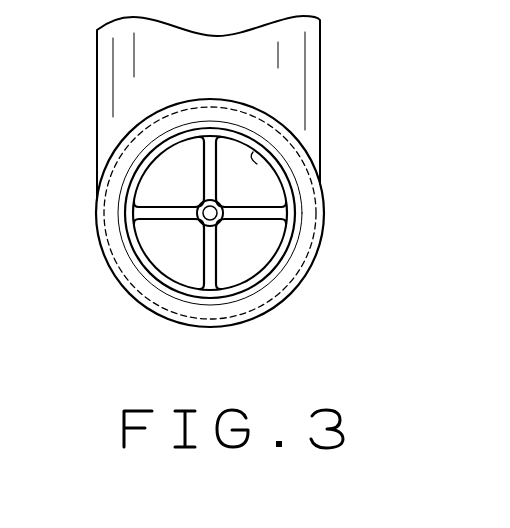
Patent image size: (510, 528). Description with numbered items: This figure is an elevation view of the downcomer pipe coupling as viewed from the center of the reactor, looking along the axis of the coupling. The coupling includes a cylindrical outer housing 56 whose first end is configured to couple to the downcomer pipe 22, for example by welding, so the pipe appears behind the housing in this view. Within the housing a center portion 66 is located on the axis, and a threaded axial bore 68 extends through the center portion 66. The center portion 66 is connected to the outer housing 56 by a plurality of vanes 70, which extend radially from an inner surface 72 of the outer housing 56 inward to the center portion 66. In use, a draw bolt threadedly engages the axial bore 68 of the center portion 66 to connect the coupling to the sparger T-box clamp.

The downcomer pipe 22 is at (321, 52).
The cylindrical outer housing 56 is at (287, 238).
The center portion 66 is at (222, 222).
The threaded axial bore 68 is at (212, 210).
The vanes 70 is at (203, 160).
The inner surface 72 is at (252, 158).